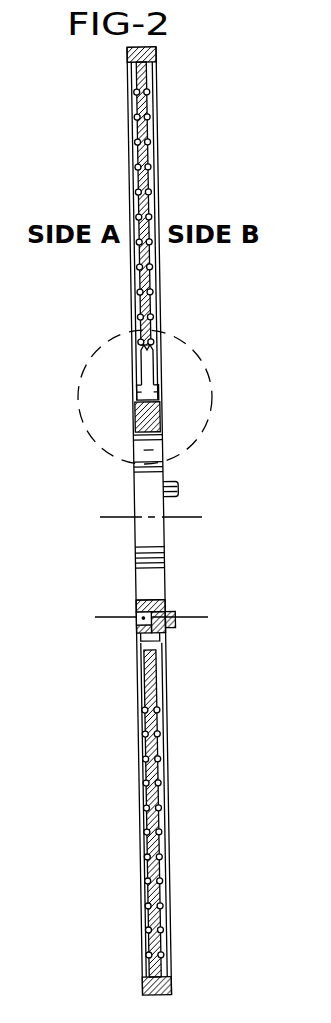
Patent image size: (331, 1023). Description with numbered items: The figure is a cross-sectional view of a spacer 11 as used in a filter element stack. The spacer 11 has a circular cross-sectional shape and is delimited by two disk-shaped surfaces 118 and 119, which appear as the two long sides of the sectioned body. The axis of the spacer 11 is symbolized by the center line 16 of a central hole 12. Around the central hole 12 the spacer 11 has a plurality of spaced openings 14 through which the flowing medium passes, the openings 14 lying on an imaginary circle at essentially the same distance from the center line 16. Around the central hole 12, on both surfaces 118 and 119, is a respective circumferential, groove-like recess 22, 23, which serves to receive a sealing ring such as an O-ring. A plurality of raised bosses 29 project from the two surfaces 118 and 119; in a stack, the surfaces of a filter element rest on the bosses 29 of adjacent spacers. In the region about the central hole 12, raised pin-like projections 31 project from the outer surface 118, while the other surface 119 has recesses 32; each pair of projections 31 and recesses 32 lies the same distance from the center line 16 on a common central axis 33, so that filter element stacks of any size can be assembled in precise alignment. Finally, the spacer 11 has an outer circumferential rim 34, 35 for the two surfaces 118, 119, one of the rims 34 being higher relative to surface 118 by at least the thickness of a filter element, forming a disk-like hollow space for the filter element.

The spacer 11 is at (174, 312).
The central hole 12 is at (133, 496).
The openings 14 is at (151, 374).
The center line 16 is at (112, 518).
The groove-like recess 22 is at (158, 400).
The groove-like recess 23 is at (134, 398).
The raised bosses 29 is at (134, 167).
The pin-like projections 31 is at (177, 487).
The recesses 32 is at (135, 618).
The common central axis 33 is at (193, 617).
The outer circumferential rim 34 is at (157, 62).
The outer circumferential rim 35 is at (128, 60).
The disk-shaped surface 118 is at (153, 100).
The disk-shaped surface 119 is at (131, 100).